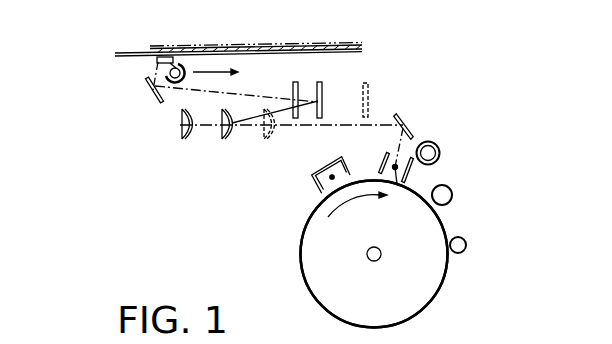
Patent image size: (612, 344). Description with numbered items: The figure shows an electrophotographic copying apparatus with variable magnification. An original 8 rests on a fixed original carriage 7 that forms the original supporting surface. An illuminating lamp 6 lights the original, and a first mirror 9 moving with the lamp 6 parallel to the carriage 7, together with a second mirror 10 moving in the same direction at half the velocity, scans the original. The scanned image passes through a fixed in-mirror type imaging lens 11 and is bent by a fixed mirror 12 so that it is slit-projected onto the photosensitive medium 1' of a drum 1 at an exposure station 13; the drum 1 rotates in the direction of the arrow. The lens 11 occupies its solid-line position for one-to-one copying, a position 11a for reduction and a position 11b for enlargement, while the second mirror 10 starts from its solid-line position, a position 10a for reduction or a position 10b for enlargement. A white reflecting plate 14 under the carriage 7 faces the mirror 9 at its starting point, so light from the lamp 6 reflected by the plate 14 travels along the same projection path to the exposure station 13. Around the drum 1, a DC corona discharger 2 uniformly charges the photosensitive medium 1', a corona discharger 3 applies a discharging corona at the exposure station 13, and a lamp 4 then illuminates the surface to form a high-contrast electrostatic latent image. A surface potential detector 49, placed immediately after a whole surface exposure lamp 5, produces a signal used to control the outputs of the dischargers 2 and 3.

The drum 1 is at (385, 254).
The photosensitive medium 1' is at (382, 255).
The DC corona discharger 2 is at (323, 161).
The corona discharger 3 is at (380, 160).
The lamp 4 is at (437, 146).
The whole surface exposure lamp 5 is at (452, 193).
The surface potential detector 49 is at (466, 243).
The illuminating lamp 6 is at (181, 64).
The original carriage 7 is at (272, 48).
The original 8 is at (304, 43).
The first mirror 9 is at (154, 98).
The second mirror 10 is at (323, 97).
The position of second mirror during reduction copying 10a is at (369, 84).
The position of second mirror during enlarged copying 10b is at (293, 83).
The in-mirror type imaging lens 11 is at (229, 141).
The position of lens during reduction copying 11a is at (271, 141).
The position of lens during enlarged copying 11b is at (186, 141).
The fixed mirror 12 is at (405, 116).
The exposure station 13 is at (401, 172).
The white reflecting plate 14 is at (155, 62).